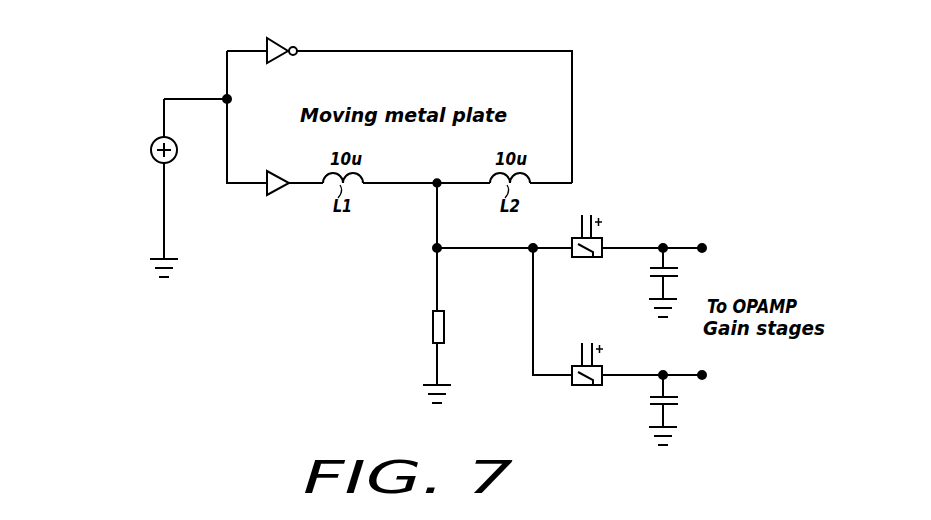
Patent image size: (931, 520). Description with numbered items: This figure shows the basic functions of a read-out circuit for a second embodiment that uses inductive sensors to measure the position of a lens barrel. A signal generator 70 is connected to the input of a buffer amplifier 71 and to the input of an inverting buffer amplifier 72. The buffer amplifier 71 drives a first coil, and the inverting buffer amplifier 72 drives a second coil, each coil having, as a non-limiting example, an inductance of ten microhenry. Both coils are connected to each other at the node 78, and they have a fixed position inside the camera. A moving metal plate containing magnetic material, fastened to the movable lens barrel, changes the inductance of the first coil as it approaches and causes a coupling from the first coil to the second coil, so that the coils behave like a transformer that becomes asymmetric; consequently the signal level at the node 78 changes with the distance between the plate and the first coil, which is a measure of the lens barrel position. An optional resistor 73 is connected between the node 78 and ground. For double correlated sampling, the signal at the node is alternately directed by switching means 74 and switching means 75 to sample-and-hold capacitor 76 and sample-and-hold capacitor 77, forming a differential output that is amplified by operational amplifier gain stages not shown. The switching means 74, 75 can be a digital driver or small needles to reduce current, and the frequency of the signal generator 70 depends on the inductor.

The signal generator 70 is at (177, 150).
The buffer amplifier 71 is at (276, 198).
The inverting buffer amplifier 72 is at (275, 65).
The resistor 73 is at (433, 323).
The switching means 74 is at (607, 242).
The switching means 75 is at (607, 370).
The sample-and-hold capacitor 76 is at (643, 270).
The sample-and-hold capacitor 77 is at (643, 397).
The node 78 is at (437, 179).